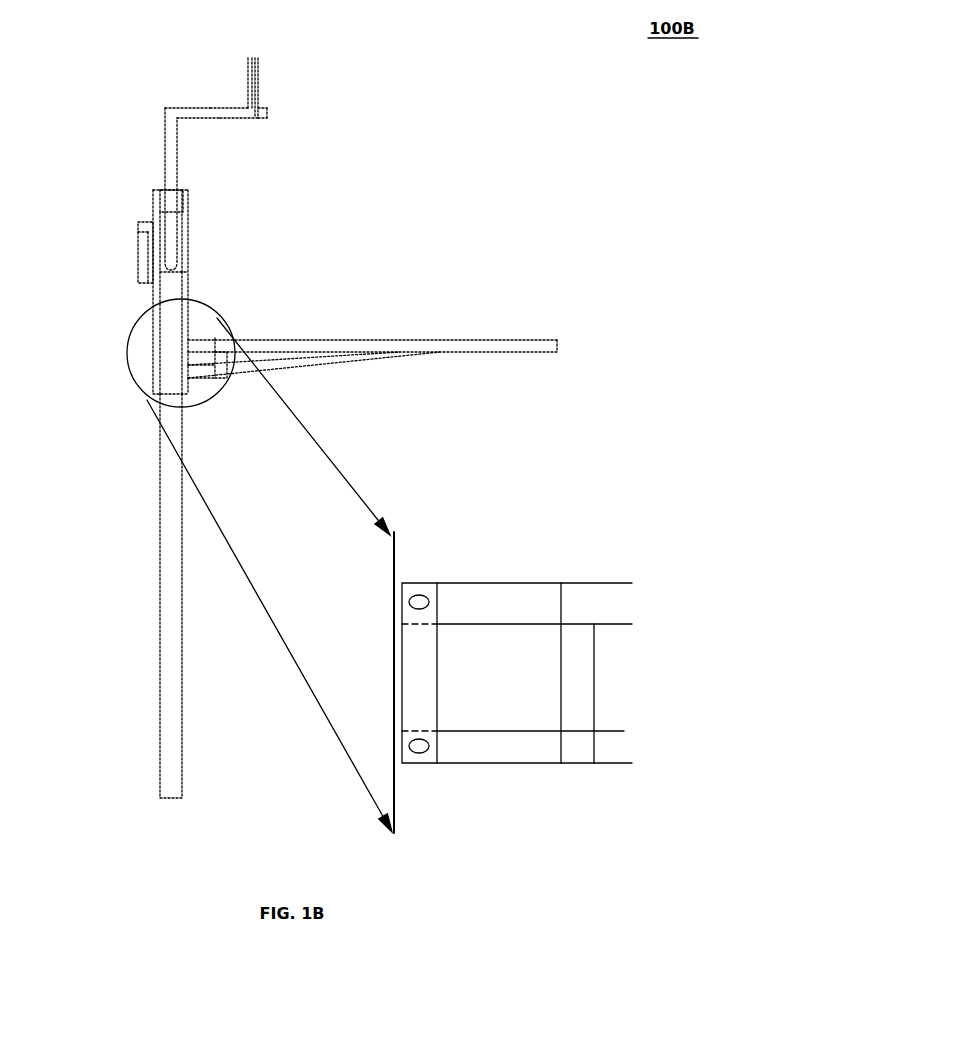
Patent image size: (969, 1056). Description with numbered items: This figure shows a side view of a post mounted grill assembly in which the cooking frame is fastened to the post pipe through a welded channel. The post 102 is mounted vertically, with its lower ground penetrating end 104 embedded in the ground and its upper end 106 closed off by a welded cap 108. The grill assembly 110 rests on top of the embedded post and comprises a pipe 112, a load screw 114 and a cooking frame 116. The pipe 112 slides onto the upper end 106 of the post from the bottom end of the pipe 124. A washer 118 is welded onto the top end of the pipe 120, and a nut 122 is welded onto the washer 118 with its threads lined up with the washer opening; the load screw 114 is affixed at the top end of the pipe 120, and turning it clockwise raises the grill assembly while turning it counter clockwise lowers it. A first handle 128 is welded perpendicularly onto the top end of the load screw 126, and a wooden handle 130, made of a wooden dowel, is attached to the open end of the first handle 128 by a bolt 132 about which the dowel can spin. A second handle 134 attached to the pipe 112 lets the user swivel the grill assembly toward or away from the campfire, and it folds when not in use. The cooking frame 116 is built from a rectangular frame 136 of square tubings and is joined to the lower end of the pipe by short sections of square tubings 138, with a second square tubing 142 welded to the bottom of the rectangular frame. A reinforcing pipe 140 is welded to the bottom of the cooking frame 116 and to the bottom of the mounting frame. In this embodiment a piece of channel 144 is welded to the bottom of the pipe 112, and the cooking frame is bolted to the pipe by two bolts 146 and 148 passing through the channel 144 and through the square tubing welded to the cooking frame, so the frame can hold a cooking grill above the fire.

The post 102 is at (160, 555).
The lower ground penetrating end 104 is at (160, 798).
The upper end 106 is at (130, 340).
The cap 108 is at (188, 272).
The grill assembly 110 is at (188, 327).
The pipe 112 is at (153, 362).
The load screw 114 is at (162, 157).
The cooking frame 116 is at (405, 342).
The washer 118 is at (186, 190).
The top end of the pipe 120 is at (153, 190).
The nut 122 is at (185, 207).
The bottom end of the pipe 124 is at (150, 395).
The top end of the load screw 126 is at (165, 108).
The first handle 128 is at (228, 108).
The wooden handle 130 is at (260, 63).
The bolt 132 is at (258, 112).
The second handle 134 is at (138, 242).
The rectangular frame 136 is at (557, 340).
The short sections of square tubings 138 is at (200, 368).
The reinforcing pipe 140 is at (330, 365).
The second square tubing 142 is at (230, 368).
The channel 144 is at (402, 683).
The bolt 146 is at (409, 602).
The bolt 148 is at (409, 747).